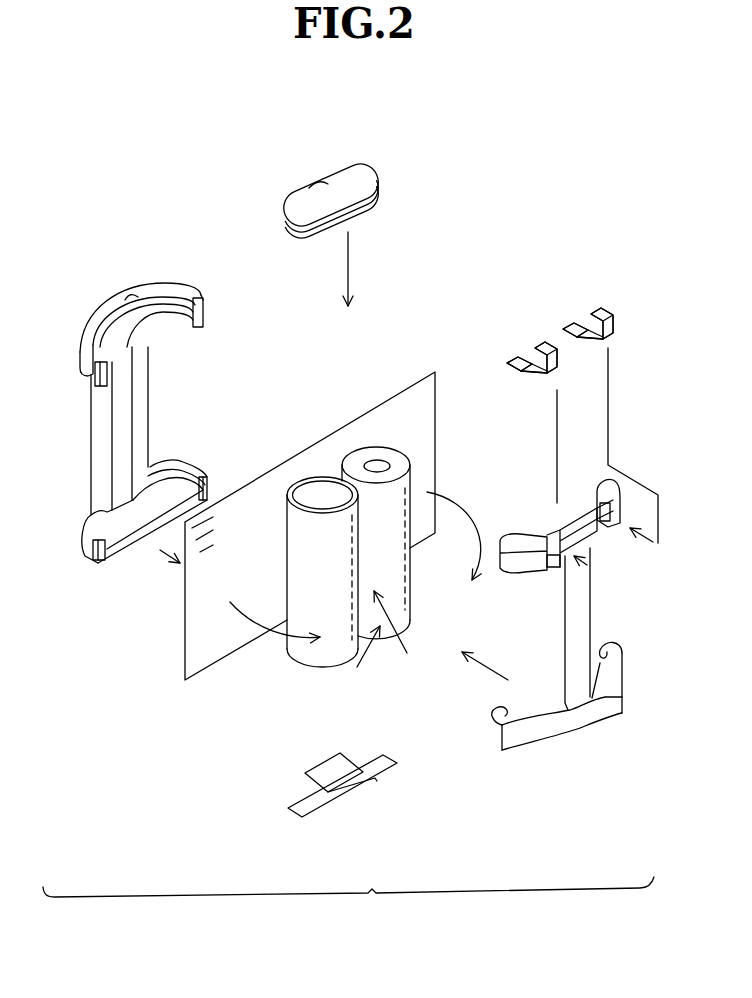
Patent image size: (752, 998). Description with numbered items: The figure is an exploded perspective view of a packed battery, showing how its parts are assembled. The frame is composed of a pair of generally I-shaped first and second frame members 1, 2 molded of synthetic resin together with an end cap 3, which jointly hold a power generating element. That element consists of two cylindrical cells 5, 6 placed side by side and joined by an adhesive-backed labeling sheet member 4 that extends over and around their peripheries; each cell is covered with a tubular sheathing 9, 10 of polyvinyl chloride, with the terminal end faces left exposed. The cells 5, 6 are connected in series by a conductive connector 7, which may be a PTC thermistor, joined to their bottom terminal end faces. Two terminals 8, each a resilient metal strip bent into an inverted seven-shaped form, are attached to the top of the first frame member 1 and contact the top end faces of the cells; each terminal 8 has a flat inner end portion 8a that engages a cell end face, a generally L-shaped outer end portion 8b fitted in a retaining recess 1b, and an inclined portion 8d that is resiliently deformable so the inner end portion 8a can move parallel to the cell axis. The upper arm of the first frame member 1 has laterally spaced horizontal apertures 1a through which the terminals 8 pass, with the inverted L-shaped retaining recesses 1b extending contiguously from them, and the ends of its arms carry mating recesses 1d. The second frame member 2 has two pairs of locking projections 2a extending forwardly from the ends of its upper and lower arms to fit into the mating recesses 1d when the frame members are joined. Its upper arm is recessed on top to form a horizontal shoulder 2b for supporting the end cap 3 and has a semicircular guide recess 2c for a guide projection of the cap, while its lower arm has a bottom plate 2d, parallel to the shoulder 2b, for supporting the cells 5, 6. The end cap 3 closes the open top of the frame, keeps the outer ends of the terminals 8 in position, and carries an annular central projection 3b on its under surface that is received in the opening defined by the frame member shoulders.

The first frame member 1 is at (532, 745).
The horizontal aperture 1a is at (553, 567).
The retaining recess 1b is at (543, 540).
The mating recess 1d is at (502, 716).
The second frame member 2 is at (157, 293).
The locking projection 2a is at (90, 386).
The horizontal shoulder 2b is at (198, 300).
The semicircular guide recess 2c is at (132, 306).
The bottom plate 2d is at (133, 525).
The end cap 3 is at (333, 190).
The annular central projection 3b is at (315, 232).
The labeling sheet member 4 is at (186, 660).
The cylindrical cell 5 is at (310, 657).
The cylindrical cell 6 is at (376, 576).
The conductive connector 7 is at (312, 808).
The terminal 8 is at (553, 363).
The flat inner end portion 8a is at (513, 358).
The L-shaped outer end portion 8b is at (543, 347).
The inclined portion 8d is at (533, 370).
The tubular sheathing 9 is at (327, 650).
The tubular sheathing 10 is at (393, 575).